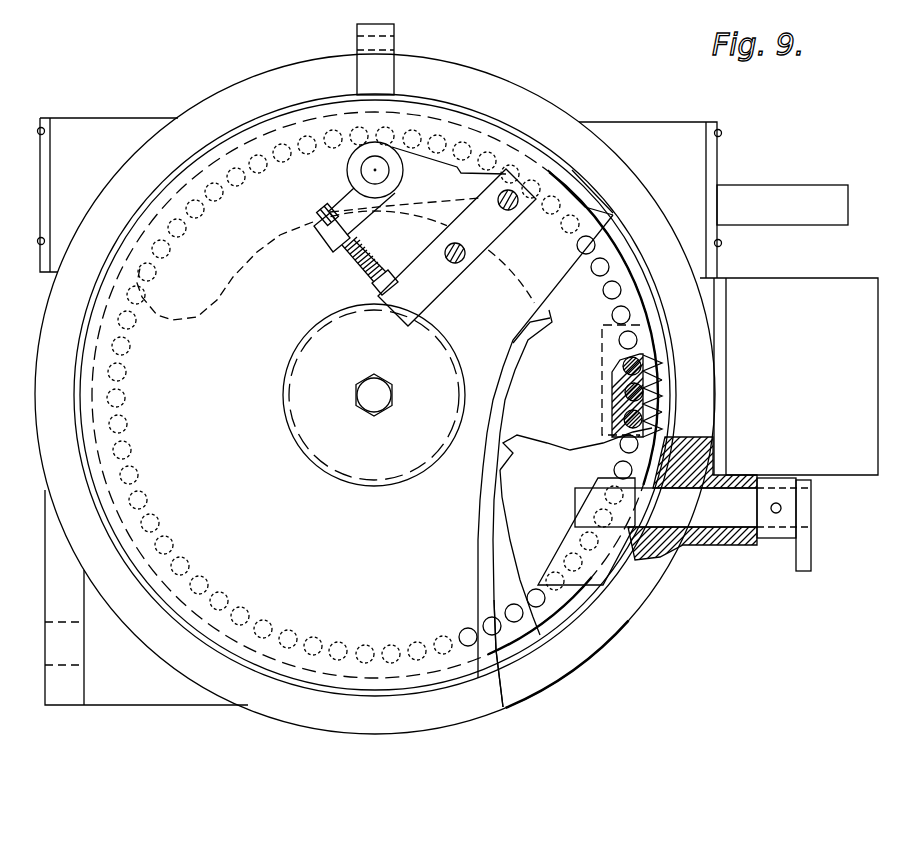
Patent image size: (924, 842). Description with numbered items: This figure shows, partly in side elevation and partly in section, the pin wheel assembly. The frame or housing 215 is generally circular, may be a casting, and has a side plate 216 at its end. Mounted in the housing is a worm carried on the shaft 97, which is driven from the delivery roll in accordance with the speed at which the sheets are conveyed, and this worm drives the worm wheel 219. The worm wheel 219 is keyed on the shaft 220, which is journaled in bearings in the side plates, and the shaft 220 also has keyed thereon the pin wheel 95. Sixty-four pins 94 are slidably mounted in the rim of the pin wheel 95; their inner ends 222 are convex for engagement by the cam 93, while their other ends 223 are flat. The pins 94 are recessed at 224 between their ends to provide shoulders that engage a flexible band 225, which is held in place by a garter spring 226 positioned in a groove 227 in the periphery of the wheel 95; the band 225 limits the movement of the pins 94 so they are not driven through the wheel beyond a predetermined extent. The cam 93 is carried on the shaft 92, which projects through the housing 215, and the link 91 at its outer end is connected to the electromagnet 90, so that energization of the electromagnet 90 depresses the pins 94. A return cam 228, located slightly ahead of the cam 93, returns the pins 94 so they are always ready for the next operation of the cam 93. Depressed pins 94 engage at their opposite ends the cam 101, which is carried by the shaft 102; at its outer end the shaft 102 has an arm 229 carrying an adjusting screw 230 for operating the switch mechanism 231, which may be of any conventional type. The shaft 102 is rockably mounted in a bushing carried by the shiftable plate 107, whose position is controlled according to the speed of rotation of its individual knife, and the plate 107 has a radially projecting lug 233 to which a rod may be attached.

The electromagnet 90 is at (870, 375).
The link 91 is at (807, 548).
The shaft 92 is at (733, 497).
The cam 93 is at (567, 547).
The pins 94 is at (620, 317).
The pin wheel 95 is at (522, 628).
The shaft 97 is at (802, 188).
The cam 101 is at (423, 197).
The shaft 102 is at (360, 170).
The shiftable plate 107 is at (388, 683).
The housing 215 is at (668, 552).
The side plate 216 is at (493, 700).
The worm wheel 219 is at (503, 462).
The shaft 220 is at (383, 408).
The inner ends 222 is at (624, 472).
The other ends 223 is at (625, 317).
The recess 224 is at (620, 388).
The flexible band 225 is at (663, 375).
The garter spring 226 is at (653, 357).
The groove 227 is at (663, 410).
The return cam 228 is at (602, 362).
The arm 229 is at (318, 225).
The adjusting screw 230 is at (370, 262).
The switch mechanism 231 is at (440, 283).
The lug 233 is at (377, 42).